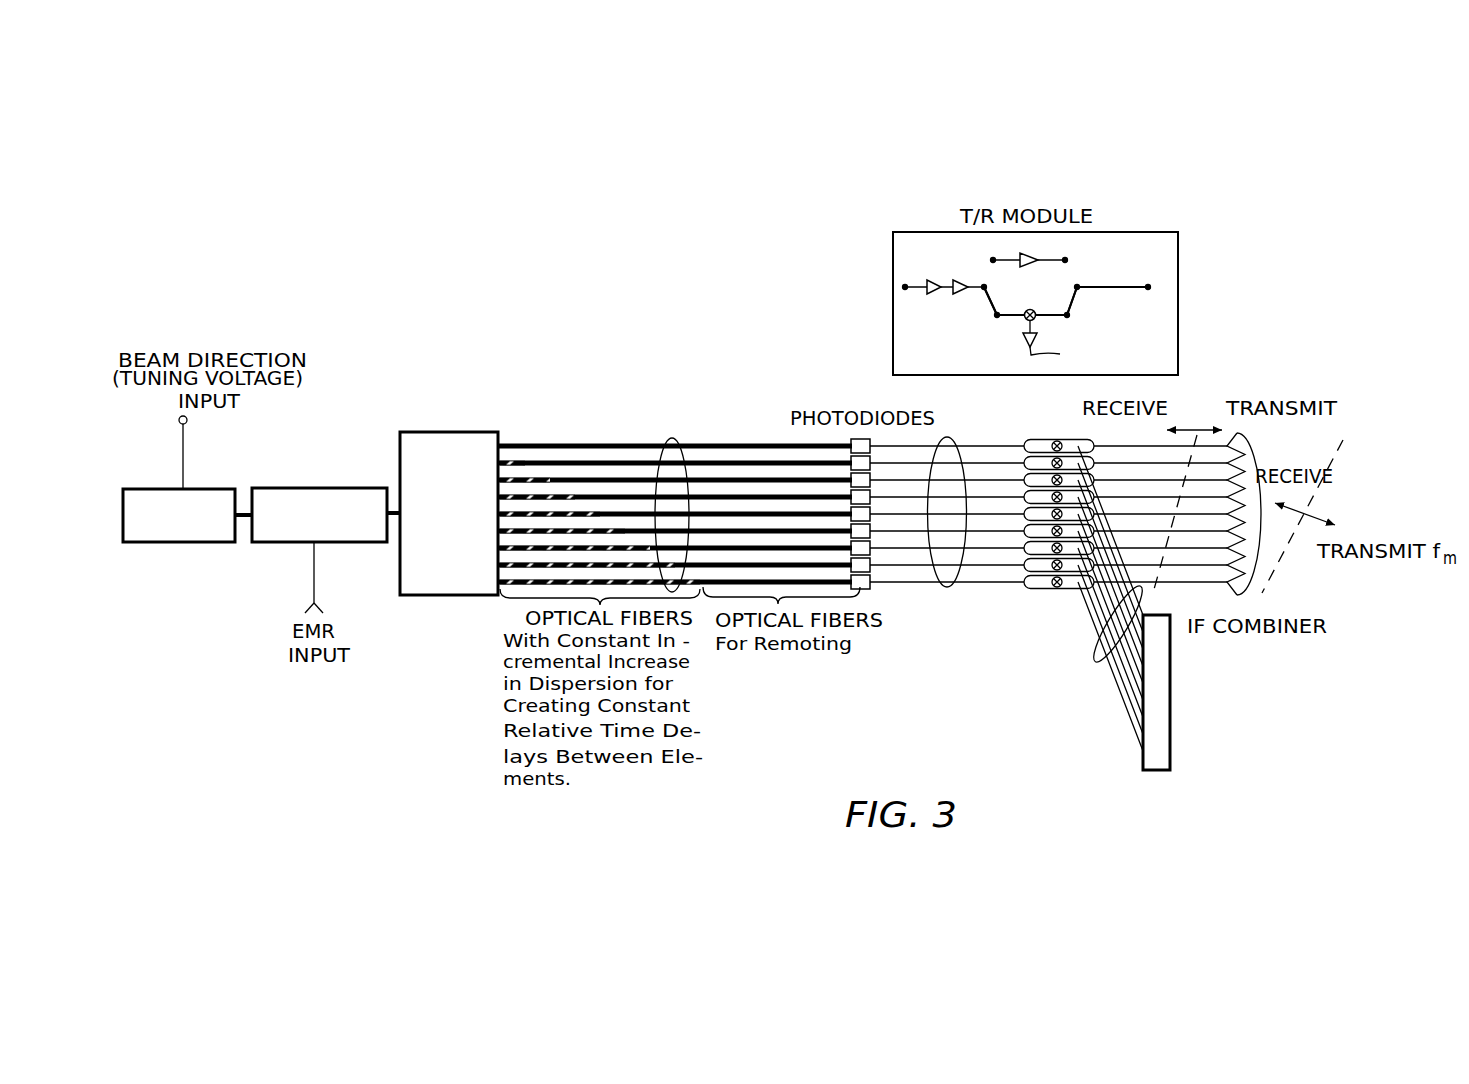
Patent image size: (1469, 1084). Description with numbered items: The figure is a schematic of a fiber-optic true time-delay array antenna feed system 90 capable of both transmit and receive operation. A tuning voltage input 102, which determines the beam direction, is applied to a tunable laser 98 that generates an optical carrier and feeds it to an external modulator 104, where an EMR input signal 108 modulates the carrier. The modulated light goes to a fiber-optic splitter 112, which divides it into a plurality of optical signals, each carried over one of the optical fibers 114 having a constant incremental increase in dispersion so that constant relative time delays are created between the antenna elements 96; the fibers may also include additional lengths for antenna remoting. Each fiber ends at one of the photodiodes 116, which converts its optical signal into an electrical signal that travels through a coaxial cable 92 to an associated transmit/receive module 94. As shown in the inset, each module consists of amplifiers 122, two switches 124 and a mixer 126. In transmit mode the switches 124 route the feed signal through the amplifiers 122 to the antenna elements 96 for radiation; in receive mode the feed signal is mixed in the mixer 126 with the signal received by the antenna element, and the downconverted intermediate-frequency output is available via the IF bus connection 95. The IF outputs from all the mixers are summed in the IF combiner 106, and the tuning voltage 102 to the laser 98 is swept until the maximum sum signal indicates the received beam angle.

The fiber optic true time-delay array antenna feed system 90 is at (680, 340).
The coaxial cable 92 is at (947, 437).
The transmit/receive (T/R) module 94 is at (1040, 588).
The IF bus connection 95 is at (1097, 660).
The antenna elements 96 is at (1237, 594).
The tunable laser 98 is at (187, 542).
The tuning voltage input 102 is at (187, 446).
The external modulator 104 is at (340, 488).
The IF combiner 106 is at (1170, 722).
The EMR input signal 108 is at (312, 574).
The fiber-optic splitter 112 is at (463, 432).
The optical fibers 114 is at (672, 438).
The photodiodes 116 is at (868, 589).
The amplifiers 122 is at (958, 281).
The switches 124 is at (985, 300).
The mixer 126 is at (1025, 318).